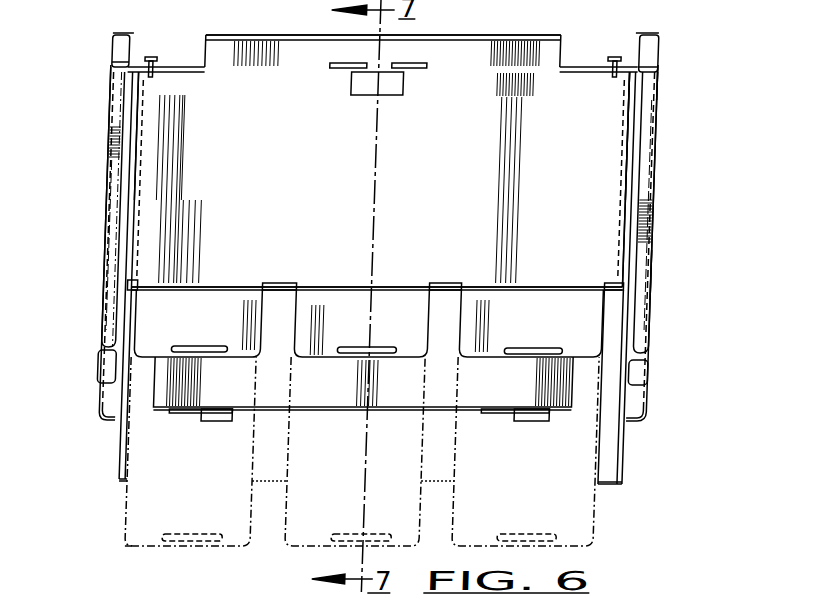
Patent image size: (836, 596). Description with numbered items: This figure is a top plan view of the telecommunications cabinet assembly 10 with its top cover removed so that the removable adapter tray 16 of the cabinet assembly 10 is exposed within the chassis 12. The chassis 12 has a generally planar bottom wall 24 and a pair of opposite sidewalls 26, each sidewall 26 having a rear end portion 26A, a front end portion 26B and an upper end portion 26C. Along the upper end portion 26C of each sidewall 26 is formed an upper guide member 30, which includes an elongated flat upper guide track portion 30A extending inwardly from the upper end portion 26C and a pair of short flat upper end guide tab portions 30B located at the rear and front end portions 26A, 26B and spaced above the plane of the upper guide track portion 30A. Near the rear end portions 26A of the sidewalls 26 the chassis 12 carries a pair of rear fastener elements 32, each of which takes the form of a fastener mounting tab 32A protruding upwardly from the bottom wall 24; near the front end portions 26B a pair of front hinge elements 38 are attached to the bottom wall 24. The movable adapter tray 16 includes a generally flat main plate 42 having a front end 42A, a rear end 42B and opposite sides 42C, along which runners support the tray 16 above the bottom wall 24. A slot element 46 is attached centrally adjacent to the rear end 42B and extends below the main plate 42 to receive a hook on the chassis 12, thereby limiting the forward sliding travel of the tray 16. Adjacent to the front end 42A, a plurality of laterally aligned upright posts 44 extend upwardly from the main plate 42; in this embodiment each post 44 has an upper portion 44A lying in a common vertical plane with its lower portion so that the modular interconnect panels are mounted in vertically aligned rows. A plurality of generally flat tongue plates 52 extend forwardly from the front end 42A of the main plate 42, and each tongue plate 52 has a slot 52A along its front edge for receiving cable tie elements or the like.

The cabinet assembly 10 is at (676, 153).
The chassis 12 is at (663, 270).
The movable interconnect management adapter tray 16 is at (543, 89).
The bottom wall 24 is at (638, 117).
The sidewall 26 is at (111, 218).
The rear end portion of sidewall 26A is at (134, 34).
The front end portion of sidewall 26B is at (112, 421).
The upper end portion of sidewall 26C is at (111, 128).
The upper guide member 30 is at (113, 189).
The upper guide track portion 30A is at (121, 248).
The upper end guide tab portion 30B is at (120, 48).
The rear fastener element 32 is at (152, 57).
The fastener mounting tab 32A is at (154, 72).
The front hinge element 38 is at (231, 421).
The main plate 42 is at (450, 160).
The front end of main plate 42A is at (401, 285).
The rear end of main plate 42B is at (285, 86).
The side of main plate 42C is at (149, 181).
The upright post 44 is at (281, 284).
The upper portion of upright post 44A is at (193, 571).
The slot element 46 is at (386, 97).
The tongue plate 52 is at (185, 313).
The slot 52A is at (238, 344).